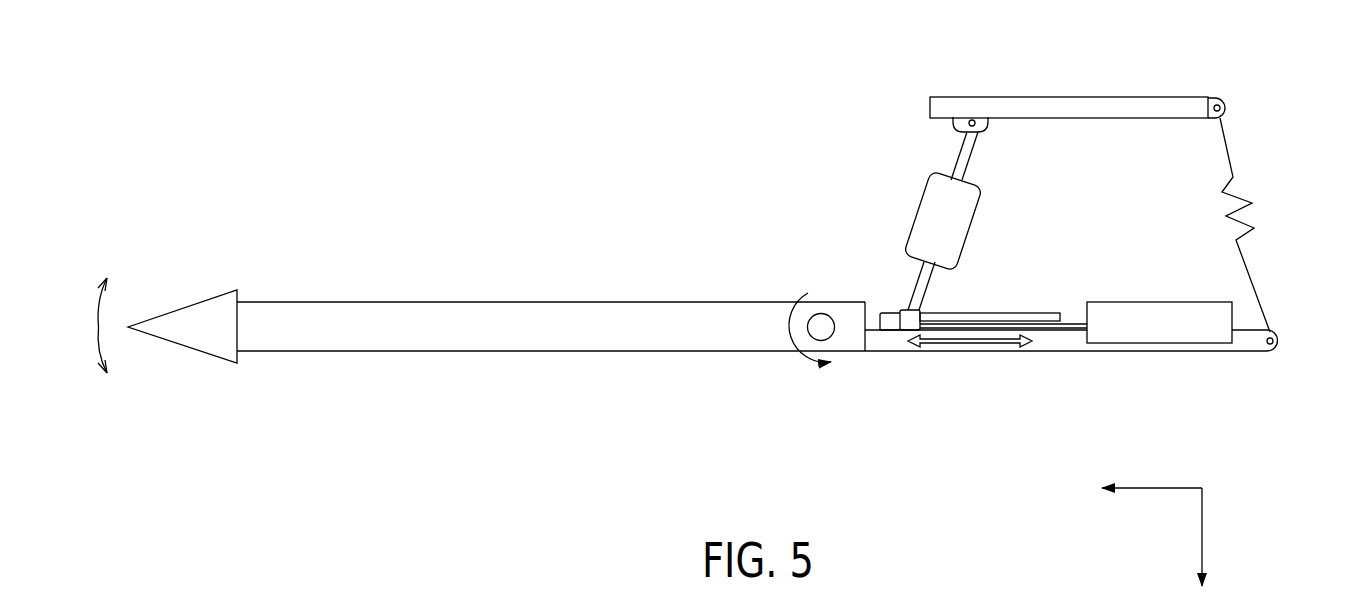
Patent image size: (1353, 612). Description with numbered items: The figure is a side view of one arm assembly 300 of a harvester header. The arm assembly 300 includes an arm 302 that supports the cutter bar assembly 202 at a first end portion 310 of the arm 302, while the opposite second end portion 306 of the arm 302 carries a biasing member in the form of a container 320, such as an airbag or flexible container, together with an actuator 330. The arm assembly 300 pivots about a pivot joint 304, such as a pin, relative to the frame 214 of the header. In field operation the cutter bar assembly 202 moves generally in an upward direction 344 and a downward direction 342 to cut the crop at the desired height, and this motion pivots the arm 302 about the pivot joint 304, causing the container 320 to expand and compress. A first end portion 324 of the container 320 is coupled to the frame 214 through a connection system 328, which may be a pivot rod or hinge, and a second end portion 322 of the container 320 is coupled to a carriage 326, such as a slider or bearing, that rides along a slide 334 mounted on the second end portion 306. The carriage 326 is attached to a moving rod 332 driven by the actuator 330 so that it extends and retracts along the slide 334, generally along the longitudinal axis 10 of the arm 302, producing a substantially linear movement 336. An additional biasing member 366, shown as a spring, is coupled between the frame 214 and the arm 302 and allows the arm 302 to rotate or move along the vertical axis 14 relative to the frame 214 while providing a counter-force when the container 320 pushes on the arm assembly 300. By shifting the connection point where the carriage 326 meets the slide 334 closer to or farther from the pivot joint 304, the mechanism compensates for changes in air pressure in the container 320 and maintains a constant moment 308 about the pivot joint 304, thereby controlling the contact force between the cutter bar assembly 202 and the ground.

The longitudinal axis 10 is at (1158, 485).
The vertical axis 14 is at (1205, 530).
The cutter bar assembly 202 is at (183, 308).
The frame 214 is at (1083, 96).
The arm assembly 300 is at (588, 203).
The arm 302 is at (650, 439).
The pivot joint 304 is at (832, 335).
The second end portion 306 is at (903, 352).
The moment 308 is at (786, 327).
The first end portion 310 is at (515, 352).
The container 320 is at (977, 212).
The second end portion 322 is at (913, 280).
The first end portion 324 is at (957, 146).
The carriage 326 is at (902, 308).
The connection system 328 is at (987, 129).
The actuator 330 is at (1160, 301).
The moving rod 332 is at (1037, 312).
The slide 334 is at (993, 311).
The linear movement 336 is at (970, 346).
The downward direction 342 is at (107, 373).
The upward direction 344 is at (107, 278).
The additional biasing member 366 is at (1252, 203).